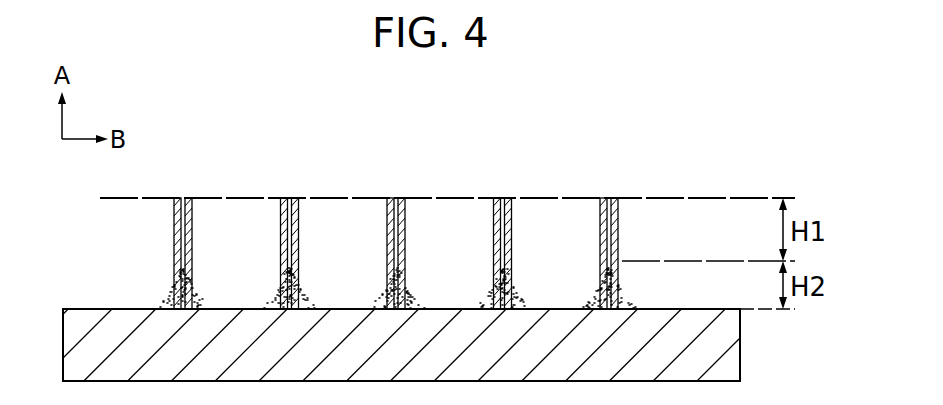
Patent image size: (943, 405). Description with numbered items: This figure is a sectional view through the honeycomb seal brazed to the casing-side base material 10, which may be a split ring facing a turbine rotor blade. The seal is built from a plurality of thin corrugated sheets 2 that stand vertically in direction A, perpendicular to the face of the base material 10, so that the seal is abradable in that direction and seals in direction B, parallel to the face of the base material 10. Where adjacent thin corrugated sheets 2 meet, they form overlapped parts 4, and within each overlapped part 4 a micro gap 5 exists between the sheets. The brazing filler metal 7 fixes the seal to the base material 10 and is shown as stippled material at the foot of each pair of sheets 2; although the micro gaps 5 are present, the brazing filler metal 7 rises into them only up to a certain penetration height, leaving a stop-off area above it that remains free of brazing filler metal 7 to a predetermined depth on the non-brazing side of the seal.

The thin corrugated sheet 2 is at (293, 197).
The overlapped part 4 is at (182, 187).
The micro gap 5 is at (183, 240).
The brazing filler metal 7 is at (202, 297).
The base material 10 is at (733, 367).